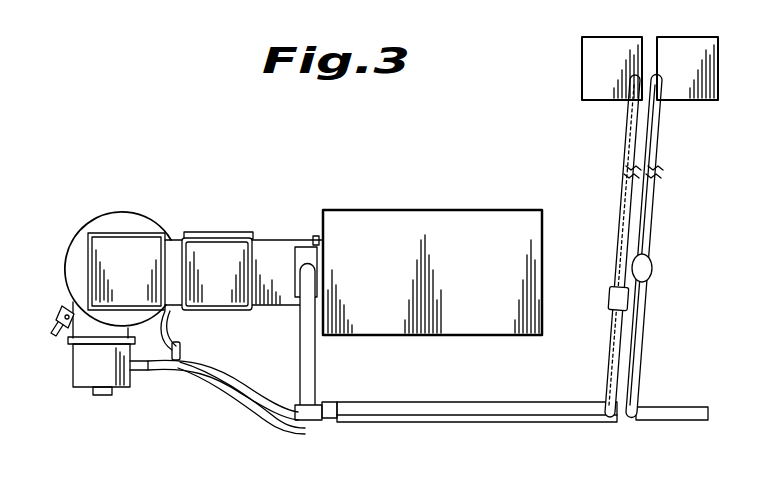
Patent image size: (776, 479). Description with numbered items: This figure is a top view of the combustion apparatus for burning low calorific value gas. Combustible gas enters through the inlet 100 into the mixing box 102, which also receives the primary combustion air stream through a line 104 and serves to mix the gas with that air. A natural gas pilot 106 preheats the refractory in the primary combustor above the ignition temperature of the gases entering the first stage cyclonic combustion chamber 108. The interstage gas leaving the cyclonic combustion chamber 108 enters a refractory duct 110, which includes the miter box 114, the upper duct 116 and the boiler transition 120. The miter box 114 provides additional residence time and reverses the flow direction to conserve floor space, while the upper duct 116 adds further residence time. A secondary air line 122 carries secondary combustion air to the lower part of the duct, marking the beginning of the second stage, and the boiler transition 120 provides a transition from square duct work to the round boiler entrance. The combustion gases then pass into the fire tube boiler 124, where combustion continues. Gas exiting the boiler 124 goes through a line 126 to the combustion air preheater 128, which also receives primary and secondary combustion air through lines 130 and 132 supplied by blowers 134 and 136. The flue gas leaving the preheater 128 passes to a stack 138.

The inlet 100 is at (100, 396).
The mixing box 102 is at (68, 374).
The line 104 is at (146, 372).
The natural gas pilot 106 is at (62, 308).
The first stage cyclonic combustion chamber 108 is at (142, 213).
The refractory duct 110 is at (108, 232).
The miter box 114 is at (197, 262).
The upper duct 116 is at (226, 233).
The boiler transition 120 is at (270, 250).
The secondary air line 122 is at (173, 362).
The fire tube boiler 124 is at (440, 217).
The line 126 is at (316, 381).
The combustion air preheater 128 is at (556, 422).
The line 130 is at (641, 351).
The line 132 is at (608, 356).
The blower 134 is at (692, 42).
The blower 136 is at (590, 56).
The stack 138 is at (668, 405).